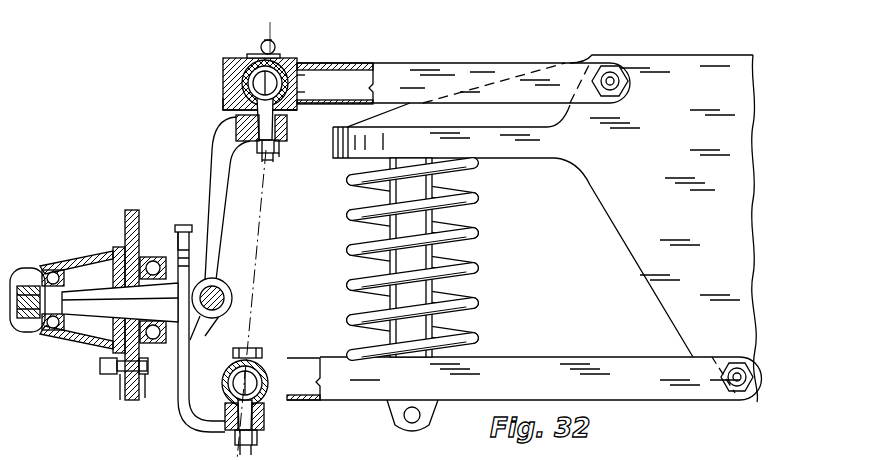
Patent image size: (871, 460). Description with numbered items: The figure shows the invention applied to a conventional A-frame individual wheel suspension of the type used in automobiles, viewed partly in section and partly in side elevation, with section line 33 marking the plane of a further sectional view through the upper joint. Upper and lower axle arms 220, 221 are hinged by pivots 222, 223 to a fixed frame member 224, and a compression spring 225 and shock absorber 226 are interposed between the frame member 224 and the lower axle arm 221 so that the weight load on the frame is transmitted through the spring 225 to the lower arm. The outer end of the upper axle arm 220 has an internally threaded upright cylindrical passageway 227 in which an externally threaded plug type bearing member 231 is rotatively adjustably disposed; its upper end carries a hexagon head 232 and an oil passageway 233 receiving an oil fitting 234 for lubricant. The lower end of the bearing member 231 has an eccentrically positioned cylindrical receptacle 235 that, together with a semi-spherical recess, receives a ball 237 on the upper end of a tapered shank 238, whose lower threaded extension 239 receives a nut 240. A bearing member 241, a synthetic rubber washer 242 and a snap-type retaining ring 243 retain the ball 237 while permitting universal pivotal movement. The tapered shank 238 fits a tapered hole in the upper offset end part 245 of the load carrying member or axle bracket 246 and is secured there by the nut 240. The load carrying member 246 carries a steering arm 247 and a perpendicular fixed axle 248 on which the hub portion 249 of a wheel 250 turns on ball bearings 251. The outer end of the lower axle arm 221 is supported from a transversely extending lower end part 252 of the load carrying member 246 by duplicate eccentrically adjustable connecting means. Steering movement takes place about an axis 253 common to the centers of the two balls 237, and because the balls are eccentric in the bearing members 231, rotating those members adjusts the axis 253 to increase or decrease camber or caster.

The section line 33 is at (322, 32).
The upper axle arm 220 is at (398, 74).
The lower axle arm 221 is at (548, 365).
The pivot 222 is at (628, 83).
The pivot 223 is at (730, 368).
The fixed frame member 224 is at (535, 148).
The compression spring 225 is at (473, 263).
The shock absorber 226 is at (440, 216).
The internally threaded upright cylindrical passageway 227 is at (302, 71).
The bearing member 231 is at (224, 72).
The hexagon head 232 is at (280, 61).
The oil passageway 233 is at (252, 56).
The oil fitting 234 is at (259, 49).
The cylindrical receptacle 235 is at (224, 100).
The ball 237 is at (224, 88).
The tapered shank 238 is at (280, 146).
The threaded extension 239 is at (267, 163).
The nut 240 is at (279, 156).
The bearing member 241 is at (300, 84).
The synthetic rubber washer 242 is at (300, 98).
The retaining ring 243 is at (292, 110).
The upper offset end part 245 is at (284, 130).
The load carrying member 246 is at (208, 200).
The steering arm 247 is at (214, 280).
The fixed axle 248 is at (105, 290).
The hub portion 249 is at (100, 260).
The wheel 250 is at (115, 395).
The ball bearings 251 is at (54, 332).
The lower end part 252 is at (265, 430).
The axis 253 is at (258, 272).